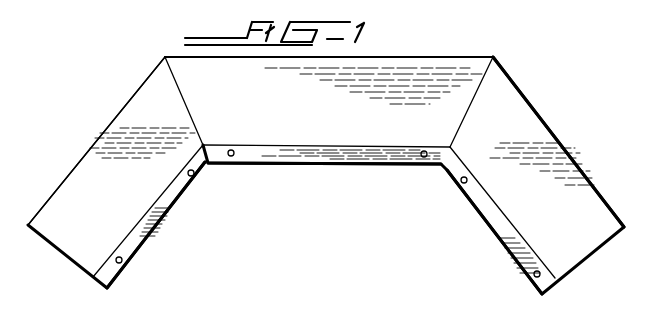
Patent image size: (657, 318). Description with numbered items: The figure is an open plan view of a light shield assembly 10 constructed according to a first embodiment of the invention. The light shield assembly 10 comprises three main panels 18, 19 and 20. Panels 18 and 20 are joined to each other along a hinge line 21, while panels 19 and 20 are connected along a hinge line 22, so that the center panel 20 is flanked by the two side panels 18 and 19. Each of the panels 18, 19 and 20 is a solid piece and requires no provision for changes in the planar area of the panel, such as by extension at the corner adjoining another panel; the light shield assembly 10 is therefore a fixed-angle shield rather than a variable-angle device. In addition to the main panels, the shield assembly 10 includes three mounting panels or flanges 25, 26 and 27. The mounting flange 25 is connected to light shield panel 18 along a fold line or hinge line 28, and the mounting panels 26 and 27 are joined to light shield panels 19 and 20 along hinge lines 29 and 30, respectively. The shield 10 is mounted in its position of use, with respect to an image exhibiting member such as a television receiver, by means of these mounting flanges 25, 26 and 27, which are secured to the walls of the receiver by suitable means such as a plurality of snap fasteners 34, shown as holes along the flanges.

The light shield assembly 10 is at (378, 174).
The panel 18 is at (537, 137).
The panel 19 is at (96, 147).
The panel 20 is at (427, 73).
The hinge line 21 is at (472, 108).
The hinge line 22 is at (183, 98).
The mounting flange 25 is at (495, 211).
The mounting panel 26 is at (143, 230).
The mounting panel 27 is at (257, 154).
The fold line or hinge line 28 is at (492, 196).
The hinge line 29 is at (147, 220).
The hinge line 30 is at (313, 143).
The snap fasteners 34 is at (192, 170).